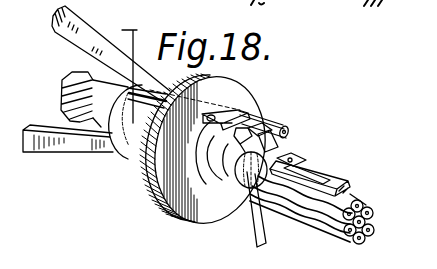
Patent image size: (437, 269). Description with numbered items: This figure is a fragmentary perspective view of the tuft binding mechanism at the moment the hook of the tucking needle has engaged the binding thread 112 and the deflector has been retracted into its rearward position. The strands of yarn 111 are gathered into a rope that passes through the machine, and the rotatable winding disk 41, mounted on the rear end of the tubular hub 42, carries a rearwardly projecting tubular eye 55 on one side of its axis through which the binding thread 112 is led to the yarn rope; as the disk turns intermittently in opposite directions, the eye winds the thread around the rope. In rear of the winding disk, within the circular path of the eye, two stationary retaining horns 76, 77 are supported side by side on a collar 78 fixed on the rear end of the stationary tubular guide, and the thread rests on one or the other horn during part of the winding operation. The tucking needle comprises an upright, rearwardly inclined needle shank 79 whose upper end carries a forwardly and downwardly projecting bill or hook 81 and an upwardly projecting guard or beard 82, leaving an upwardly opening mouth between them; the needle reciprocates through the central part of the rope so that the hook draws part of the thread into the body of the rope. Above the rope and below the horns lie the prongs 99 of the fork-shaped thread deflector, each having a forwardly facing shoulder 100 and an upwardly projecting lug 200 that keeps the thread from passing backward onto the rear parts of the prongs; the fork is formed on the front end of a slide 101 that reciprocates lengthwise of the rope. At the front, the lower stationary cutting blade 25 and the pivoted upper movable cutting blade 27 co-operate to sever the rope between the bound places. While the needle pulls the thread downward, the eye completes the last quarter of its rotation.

The lower stationary cutting blade 25 is at (43, 128).
The upper movable cutting blade 27 is at (64, 37).
The winding disk 41 is at (162, 208).
The tubular hub 42 is at (138, 148).
The eye 55 is at (246, 145).
The retaining horn 76 is at (204, 127).
The retaining horn 77 is at (257, 118).
The collar 78 is at (208, 192).
The needle shank 79 is at (258, 242).
The bill or hook 81 is at (291, 129).
The guard or beard 82 is at (206, 127).
The deflector prong 99 is at (283, 156).
The shoulder 100 is at (318, 170).
The slide 101 is at (345, 188).
The strands of yarn 111 is at (366, 233).
The binding thread 112 is at (123, 70).
The lug 200 is at (300, 162).